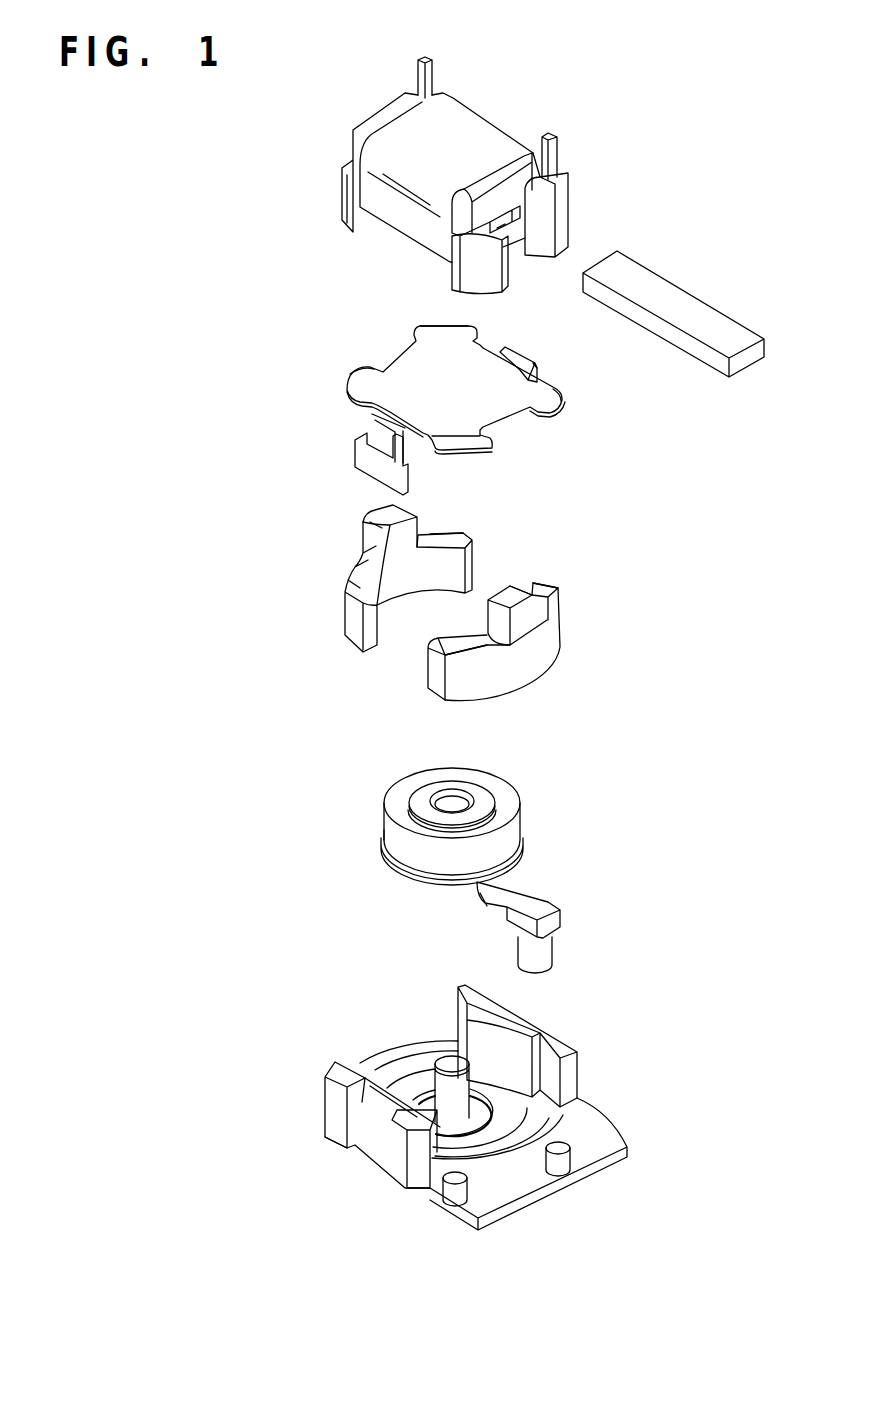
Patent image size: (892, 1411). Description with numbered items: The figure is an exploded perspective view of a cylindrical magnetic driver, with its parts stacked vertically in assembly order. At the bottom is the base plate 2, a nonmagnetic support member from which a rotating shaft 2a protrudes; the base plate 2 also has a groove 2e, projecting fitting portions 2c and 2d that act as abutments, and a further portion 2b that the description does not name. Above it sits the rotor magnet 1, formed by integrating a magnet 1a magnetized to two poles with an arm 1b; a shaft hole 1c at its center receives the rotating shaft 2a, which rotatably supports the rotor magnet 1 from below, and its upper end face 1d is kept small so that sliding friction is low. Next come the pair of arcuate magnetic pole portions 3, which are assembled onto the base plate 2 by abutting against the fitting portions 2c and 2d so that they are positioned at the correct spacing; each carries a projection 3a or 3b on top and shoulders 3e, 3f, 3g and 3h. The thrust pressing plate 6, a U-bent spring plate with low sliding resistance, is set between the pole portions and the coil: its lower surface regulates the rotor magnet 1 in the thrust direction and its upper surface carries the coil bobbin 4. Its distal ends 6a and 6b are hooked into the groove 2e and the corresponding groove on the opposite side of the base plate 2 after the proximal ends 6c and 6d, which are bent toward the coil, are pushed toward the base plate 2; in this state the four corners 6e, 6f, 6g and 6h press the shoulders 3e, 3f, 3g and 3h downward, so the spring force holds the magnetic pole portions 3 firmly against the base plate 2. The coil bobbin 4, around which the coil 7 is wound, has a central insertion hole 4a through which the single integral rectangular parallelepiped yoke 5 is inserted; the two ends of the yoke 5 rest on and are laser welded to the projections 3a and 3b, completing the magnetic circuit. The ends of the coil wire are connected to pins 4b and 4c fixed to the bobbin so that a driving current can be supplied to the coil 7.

The rotor magnet 1 is at (372, 866).
The magnet 1a is at (510, 844).
The arm 1b is at (537, 904).
The shaft hole 1c is at (452, 803).
The end face 1d is at (422, 801).
The base plate 2 is at (337, 1121).
The rotating shaft 2a is at (452, 1062).
The base plate portion 2b is at (510, 1181).
The fitting portion 2c is at (510, 1051).
The fitting portion 2d is at (370, 1079).
The groove 2e is at (378, 1114).
The magnetic pole portions 3 is at (435, 674).
The projection 3a is at (387, 513).
The projection 3b is at (527, 591).
The shoulder 3e is at (470, 650).
The shoulder 3f is at (553, 606).
The shoulder 3g is at (450, 538).
The shoulder 3h is at (358, 581).
The coil bobbin 4 is at (349, 200).
The insertion hole 4a is at (493, 224).
The pin 4b is at (424, 57).
The pin 4c is at (548, 133).
The rectangular parallelepiped yoke 5 is at (673, 308).
The thrust pressing plate 6 is at (362, 384).
The distal end 6a is at (377, 460).
The distal end 6b is at (543, 356).
The proximal end 6c is at (377, 422).
The proximal end 6d is at (523, 341).
The corner 6e is at (470, 443).
The corner 6f is at (548, 398).
The corner 6g is at (440, 334).
The corner 6h is at (358, 381).
The coil 7 is at (410, 222).